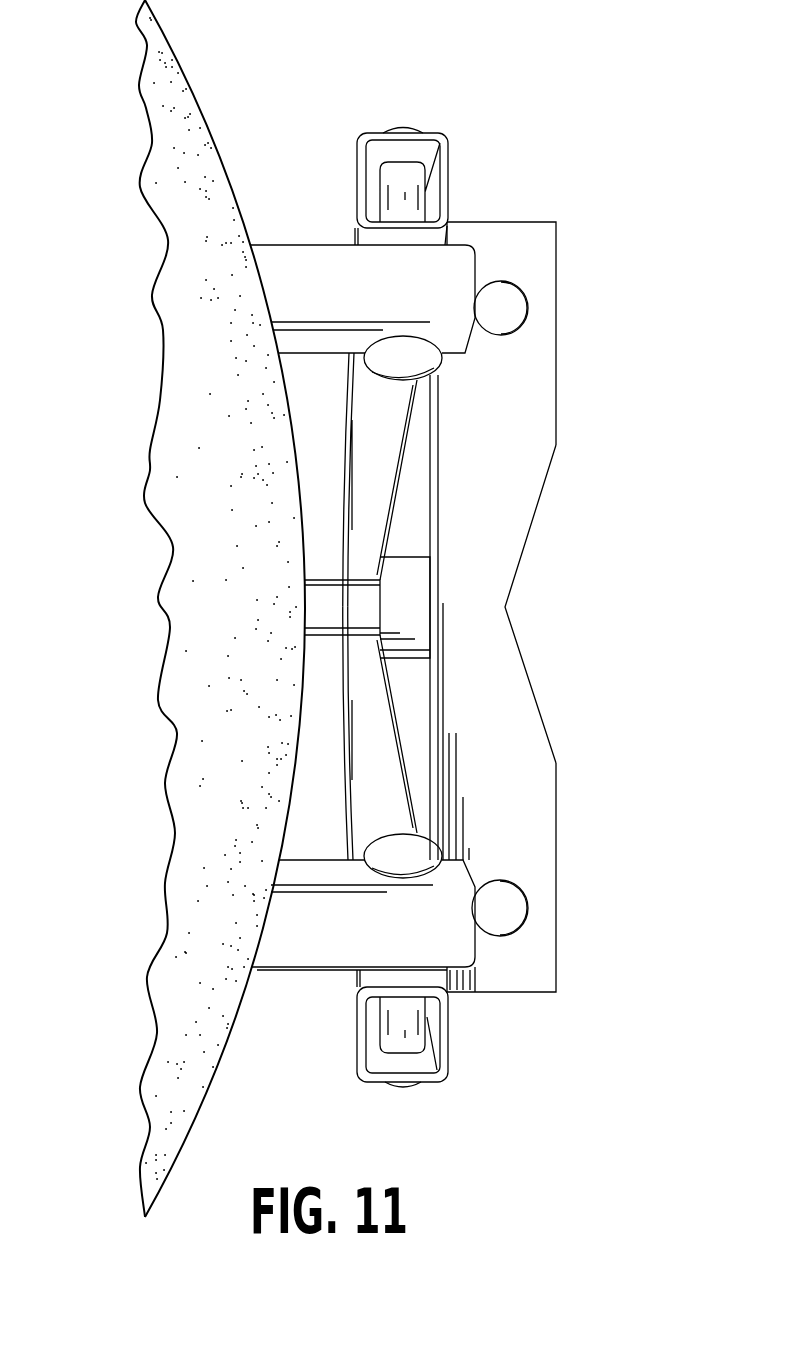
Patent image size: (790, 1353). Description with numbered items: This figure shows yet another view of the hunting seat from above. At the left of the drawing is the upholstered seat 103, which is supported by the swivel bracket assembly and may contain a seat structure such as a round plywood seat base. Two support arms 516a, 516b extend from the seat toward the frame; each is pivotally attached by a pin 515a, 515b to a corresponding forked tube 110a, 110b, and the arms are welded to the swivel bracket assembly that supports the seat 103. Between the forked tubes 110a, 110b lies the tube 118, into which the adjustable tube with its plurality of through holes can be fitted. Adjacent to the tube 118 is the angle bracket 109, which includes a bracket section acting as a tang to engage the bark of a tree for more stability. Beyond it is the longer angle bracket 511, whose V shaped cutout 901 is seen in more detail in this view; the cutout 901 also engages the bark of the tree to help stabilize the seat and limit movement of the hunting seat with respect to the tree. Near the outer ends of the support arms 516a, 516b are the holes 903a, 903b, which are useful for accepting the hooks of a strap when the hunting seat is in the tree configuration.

The seat 103 is at (158, 107).
The support arm 516a is at (322, 276).
The pin 515a is at (407, 370).
The forked tube 110a is at (372, 450).
The tube 118 is at (335, 608).
The forked tube 110b is at (371, 772).
The pin 515b is at (390, 850).
The support arm 516b is at (293, 940).
The hole 903a is at (513, 303).
The angle bracket 109 is at (415, 595).
The V shaped cutout 901 is at (508, 617).
The longer angle bracket 511 is at (533, 750).
The hole 903b is at (513, 908).